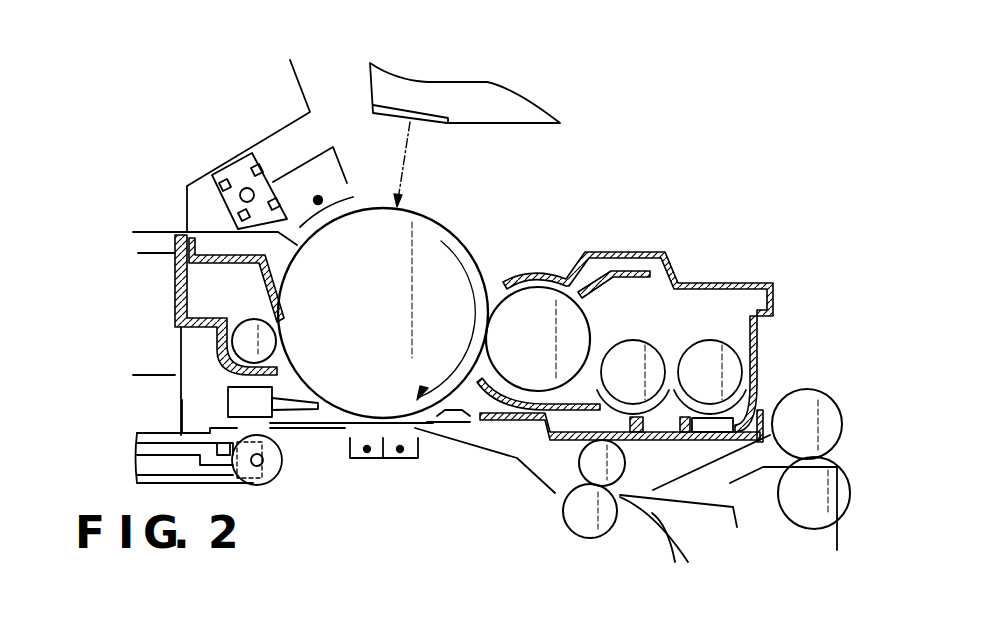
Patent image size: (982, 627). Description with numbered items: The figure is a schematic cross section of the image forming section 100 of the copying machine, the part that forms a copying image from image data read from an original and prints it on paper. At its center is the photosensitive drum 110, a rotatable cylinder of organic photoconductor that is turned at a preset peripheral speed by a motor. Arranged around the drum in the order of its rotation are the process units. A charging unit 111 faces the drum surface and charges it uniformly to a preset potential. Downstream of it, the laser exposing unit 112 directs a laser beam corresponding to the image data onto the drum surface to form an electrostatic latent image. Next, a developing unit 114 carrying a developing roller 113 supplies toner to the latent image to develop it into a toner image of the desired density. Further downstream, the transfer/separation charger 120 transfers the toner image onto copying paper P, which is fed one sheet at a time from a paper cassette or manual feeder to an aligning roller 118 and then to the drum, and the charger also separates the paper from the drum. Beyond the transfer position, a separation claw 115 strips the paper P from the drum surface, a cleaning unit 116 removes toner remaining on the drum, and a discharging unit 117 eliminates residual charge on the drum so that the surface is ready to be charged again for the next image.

The image forming section 100 is at (620, 167).
The photosensitive drum 110 is at (448, 235).
The charging unit 111 is at (319, 197).
The laser exposing unit 112 is at (532, 108).
The developing roller 113 is at (533, 302).
The developing unit 114 is at (648, 300).
The separation claw 115 is at (280, 400).
The cleaning unit 116 is at (260, 292).
The discharging unit 117 is at (223, 212).
The aligning roller 118 is at (568, 520).
The transfer/separation charger 120 is at (358, 460).
The copying paper P is at (287, 430).